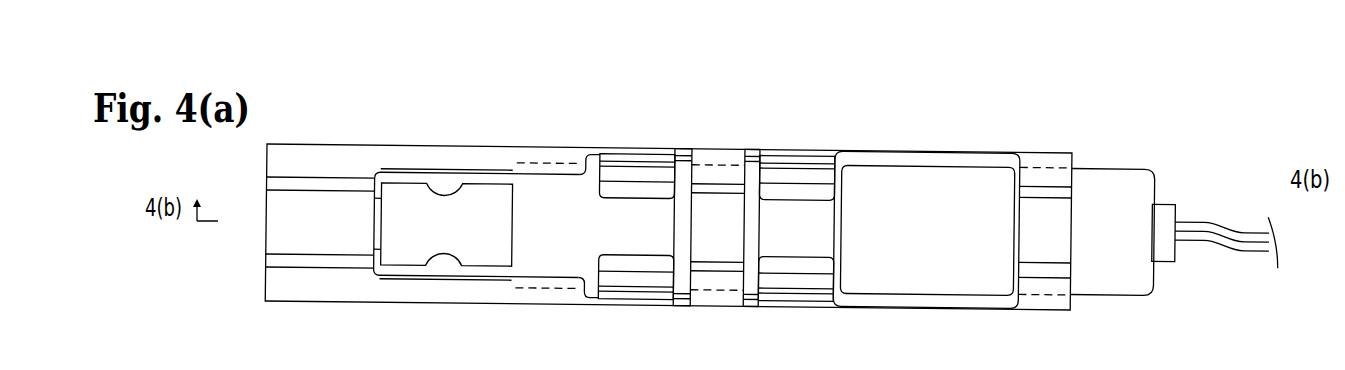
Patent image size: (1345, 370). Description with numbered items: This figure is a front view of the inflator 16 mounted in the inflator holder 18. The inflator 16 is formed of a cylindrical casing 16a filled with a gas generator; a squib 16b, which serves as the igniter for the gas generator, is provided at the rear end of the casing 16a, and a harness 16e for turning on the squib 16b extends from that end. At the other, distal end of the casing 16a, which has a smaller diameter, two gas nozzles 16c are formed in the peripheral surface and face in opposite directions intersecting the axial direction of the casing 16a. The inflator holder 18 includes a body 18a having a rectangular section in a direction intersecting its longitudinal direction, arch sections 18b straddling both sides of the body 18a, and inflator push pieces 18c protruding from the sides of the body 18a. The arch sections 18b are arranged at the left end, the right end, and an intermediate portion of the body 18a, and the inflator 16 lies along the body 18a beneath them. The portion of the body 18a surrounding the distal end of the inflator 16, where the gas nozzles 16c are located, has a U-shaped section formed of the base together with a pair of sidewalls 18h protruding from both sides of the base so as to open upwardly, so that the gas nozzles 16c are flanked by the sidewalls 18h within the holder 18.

The inflator 16 is at (1158, 157).
The cylindrical casing 16a is at (913, 273).
The squib 16b is at (1167, 255).
The gas nozzle 16c is at (445, 182).
The harness 16e is at (1243, 247).
The inflator holder 18 is at (321, 128).
The body 18a is at (933, 152).
The arch section 18b is at (273, 233).
The inflator push piece 18c is at (600, 195).
The sidewall 18h is at (481, 160).